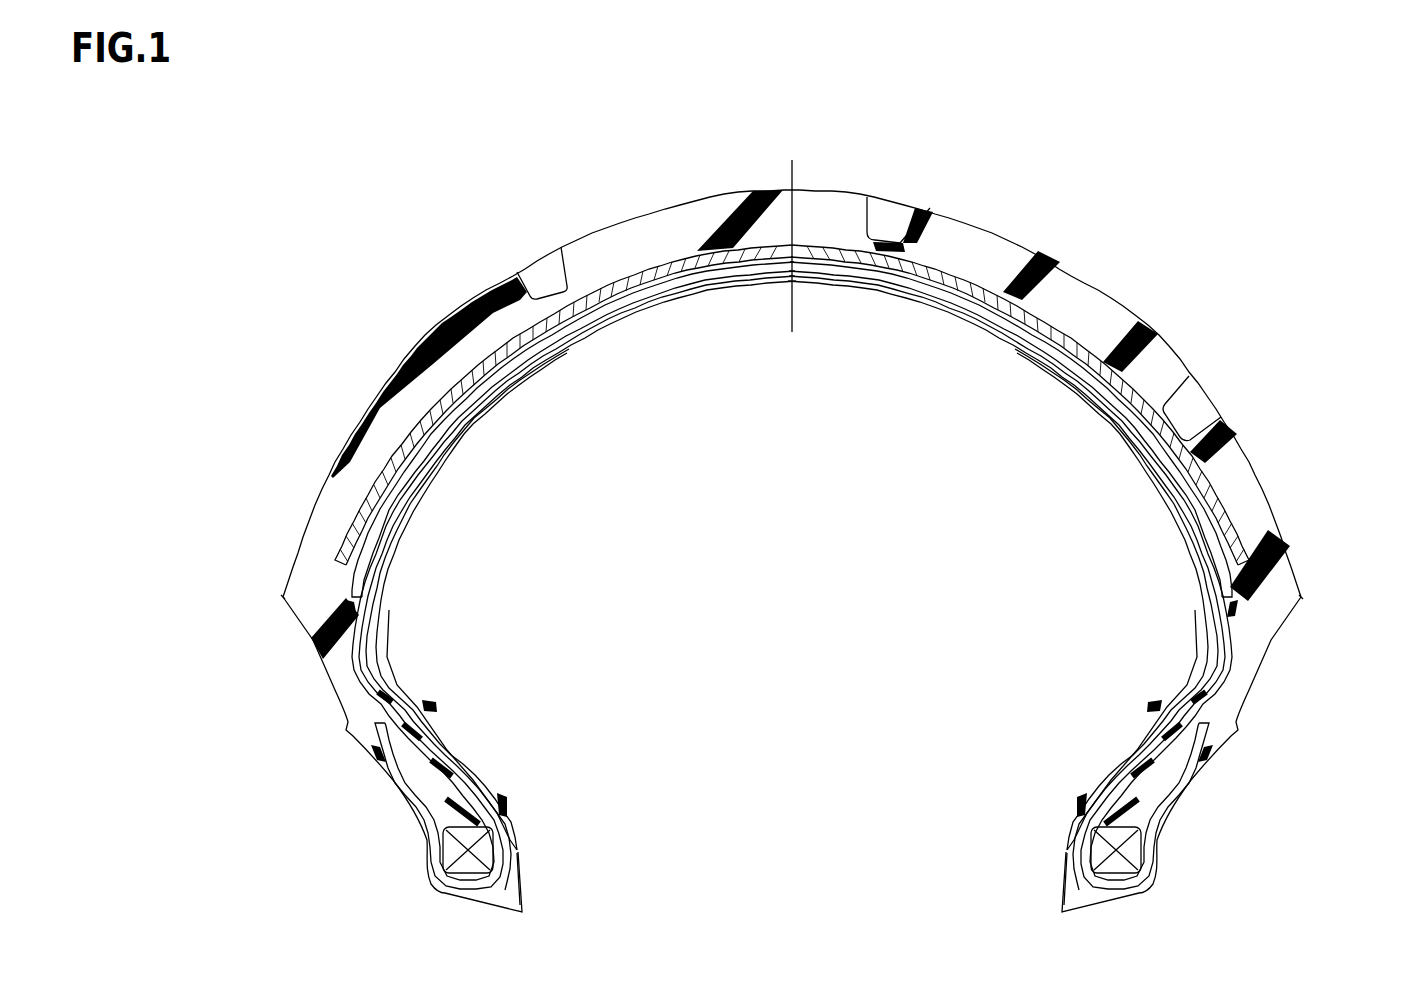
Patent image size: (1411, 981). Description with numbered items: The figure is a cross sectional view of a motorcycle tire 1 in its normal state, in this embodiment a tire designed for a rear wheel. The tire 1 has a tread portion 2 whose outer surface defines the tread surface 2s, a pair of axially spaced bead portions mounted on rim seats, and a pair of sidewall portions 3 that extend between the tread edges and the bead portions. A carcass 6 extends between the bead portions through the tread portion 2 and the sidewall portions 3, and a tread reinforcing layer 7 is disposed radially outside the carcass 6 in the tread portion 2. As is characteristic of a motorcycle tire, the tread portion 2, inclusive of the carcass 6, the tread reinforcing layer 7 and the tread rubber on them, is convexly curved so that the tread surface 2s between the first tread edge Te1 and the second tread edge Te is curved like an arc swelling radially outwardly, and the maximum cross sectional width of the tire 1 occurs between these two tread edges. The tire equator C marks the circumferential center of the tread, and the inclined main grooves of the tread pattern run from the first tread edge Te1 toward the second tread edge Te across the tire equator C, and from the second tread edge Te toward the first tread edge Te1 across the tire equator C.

The motorcycle tire 1 is at (1126, 236).
The tread portion 2 is at (1023, 217).
The tread surface 2s is at (1124, 308).
The sidewall portion 3 is at (319, 700).
The carcass 6 is at (880, 272).
The tread reinforcing layer 7 is at (722, 252).
The first tread edge Te1 is at (283, 597).
The second tread edge Te is at (1301, 597).
The tire equator C is at (792, 227).